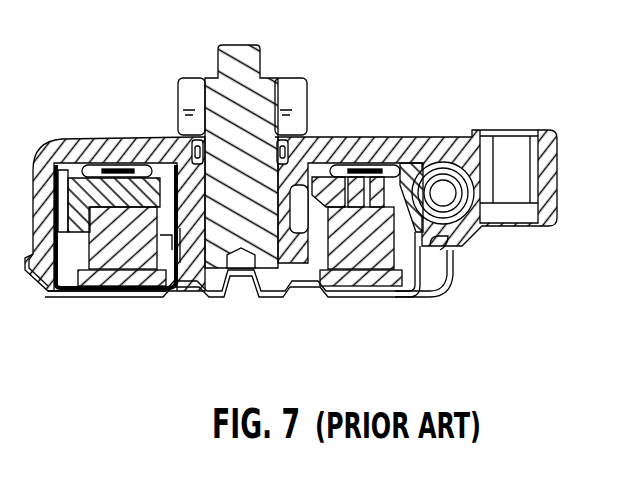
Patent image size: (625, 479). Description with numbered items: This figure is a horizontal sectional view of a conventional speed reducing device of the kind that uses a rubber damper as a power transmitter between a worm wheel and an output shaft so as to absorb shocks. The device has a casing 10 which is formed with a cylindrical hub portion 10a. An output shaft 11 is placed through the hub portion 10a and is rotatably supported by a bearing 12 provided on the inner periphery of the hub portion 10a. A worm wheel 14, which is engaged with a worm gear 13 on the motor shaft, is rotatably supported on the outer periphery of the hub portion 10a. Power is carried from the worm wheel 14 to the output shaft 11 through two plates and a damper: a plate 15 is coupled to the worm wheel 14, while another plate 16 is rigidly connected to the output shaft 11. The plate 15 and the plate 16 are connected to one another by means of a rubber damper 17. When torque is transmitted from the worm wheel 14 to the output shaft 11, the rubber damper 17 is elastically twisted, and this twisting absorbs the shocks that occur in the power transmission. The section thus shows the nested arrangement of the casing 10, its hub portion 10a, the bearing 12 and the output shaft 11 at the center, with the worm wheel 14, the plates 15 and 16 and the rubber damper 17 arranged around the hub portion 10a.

The casing 10 is at (131, 143).
The cylindrical hub portion 10a is at (182, 238).
The output shaft 11 is at (250, 92).
The bearing 12 is at (316, 176).
The worm gear 13 is at (452, 192).
The worm wheel 14 is at (418, 232).
The plate 15 is at (357, 185).
The plate 16 is at (313, 295).
The rubber damper 17 is at (360, 262).